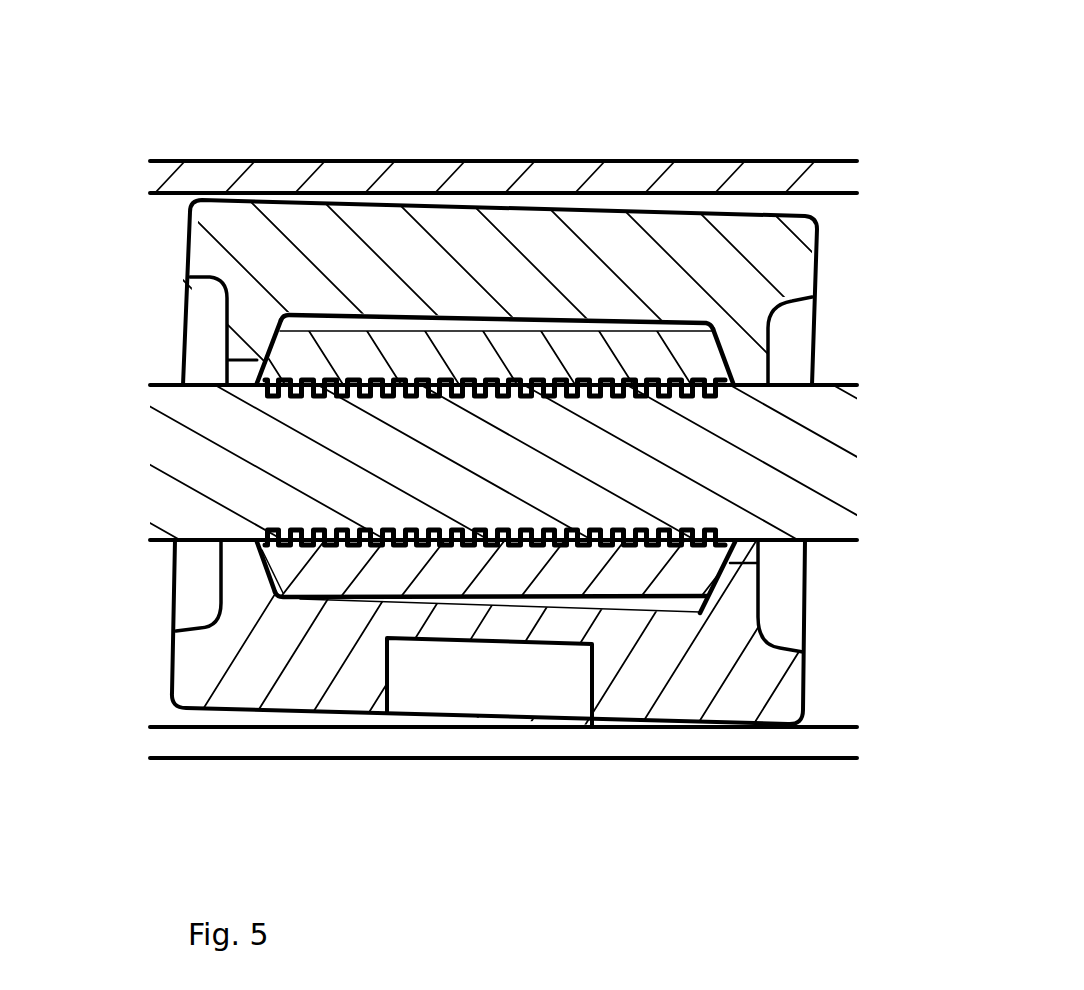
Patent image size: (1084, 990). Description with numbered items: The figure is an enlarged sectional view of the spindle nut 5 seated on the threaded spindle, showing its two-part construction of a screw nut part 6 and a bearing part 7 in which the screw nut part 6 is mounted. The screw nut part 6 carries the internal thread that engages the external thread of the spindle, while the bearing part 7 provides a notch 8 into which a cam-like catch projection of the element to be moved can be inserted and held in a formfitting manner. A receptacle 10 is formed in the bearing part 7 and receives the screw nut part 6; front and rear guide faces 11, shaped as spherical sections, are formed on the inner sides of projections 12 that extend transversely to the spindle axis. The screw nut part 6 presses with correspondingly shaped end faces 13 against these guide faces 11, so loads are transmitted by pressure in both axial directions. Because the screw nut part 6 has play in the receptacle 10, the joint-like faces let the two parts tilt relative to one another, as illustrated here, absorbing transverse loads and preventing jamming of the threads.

The spindle nut 5 is at (830, 262).
The screw nut part 6 is at (647, 570).
The bearing part 7 is at (637, 252).
The notch 8 is at (427, 680).
The receptacle 10 is at (328, 317).
The guide faces 11 is at (267, 363).
The projections 12 is at (248, 348).
The end faces 13 is at (723, 347).